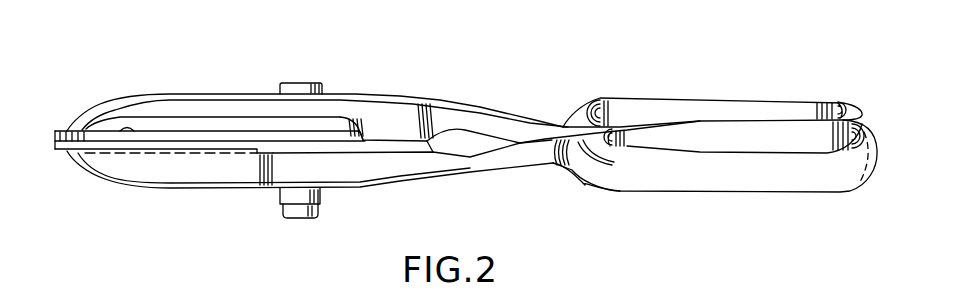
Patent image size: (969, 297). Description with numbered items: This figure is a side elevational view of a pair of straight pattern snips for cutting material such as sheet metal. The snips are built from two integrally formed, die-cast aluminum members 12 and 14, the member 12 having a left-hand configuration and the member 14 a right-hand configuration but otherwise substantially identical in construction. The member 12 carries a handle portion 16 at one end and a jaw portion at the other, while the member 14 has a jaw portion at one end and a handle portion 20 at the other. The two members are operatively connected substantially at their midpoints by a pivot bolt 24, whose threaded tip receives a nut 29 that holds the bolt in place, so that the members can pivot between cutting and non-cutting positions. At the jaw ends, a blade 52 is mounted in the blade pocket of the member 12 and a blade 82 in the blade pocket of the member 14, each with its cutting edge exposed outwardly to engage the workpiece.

The member 12 is at (440, 92).
The member 14 is at (462, 196).
The handle portion 16 is at (649, 87).
The handle portion 20 is at (681, 197).
The pivot bolt 24 is at (305, 83).
The nut 29 is at (322, 202).
The blade 52 is at (58, 130).
The blade 82 is at (60, 152).